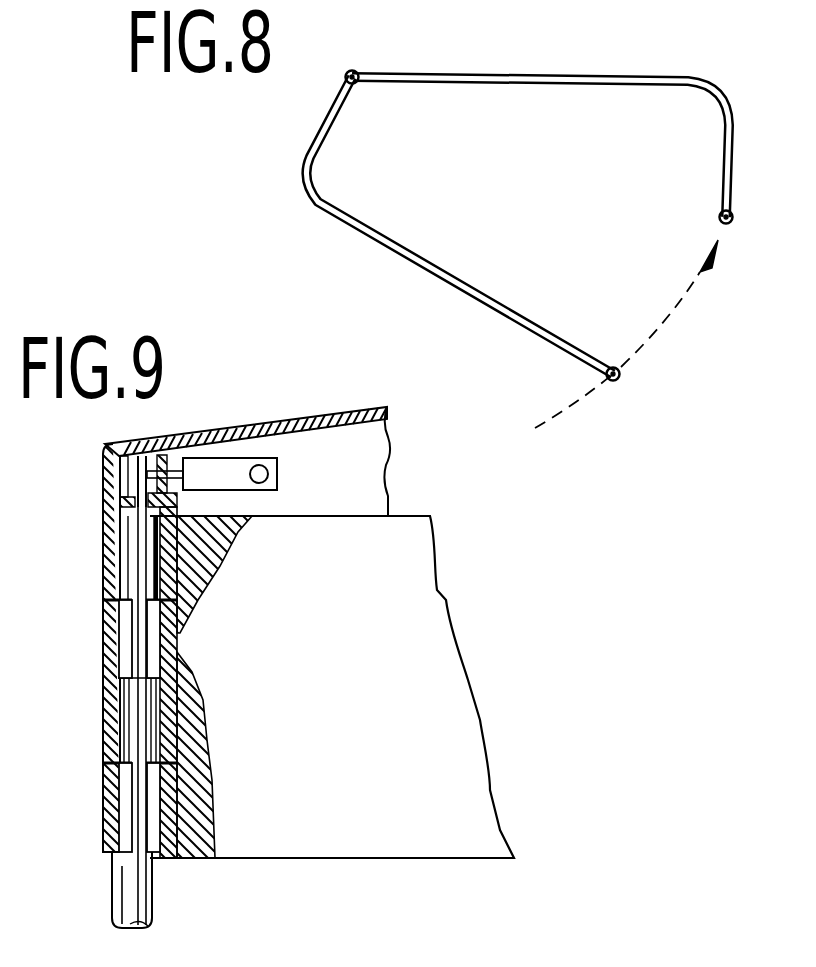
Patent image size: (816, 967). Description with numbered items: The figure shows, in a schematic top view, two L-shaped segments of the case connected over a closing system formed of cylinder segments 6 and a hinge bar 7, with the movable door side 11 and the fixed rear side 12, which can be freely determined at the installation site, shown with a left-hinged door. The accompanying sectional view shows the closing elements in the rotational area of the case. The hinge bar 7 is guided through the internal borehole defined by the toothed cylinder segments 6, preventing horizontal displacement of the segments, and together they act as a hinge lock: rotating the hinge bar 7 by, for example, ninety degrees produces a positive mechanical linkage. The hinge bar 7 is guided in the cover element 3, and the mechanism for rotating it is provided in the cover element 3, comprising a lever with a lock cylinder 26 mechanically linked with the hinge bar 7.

In FIG. 9, the cover element 3 is at (392, 442).
In FIG. 8, the cylinder segments 6 is at (345, 71).
In FIG. 9, the hinge bar 7 is at (142, 895).
In FIG. 8, the movable door side 11 is at (372, 240).
In FIG. 9, the movable door side 11 is at (103, 718).
In FIG. 8, the fixed rear side 12 is at (474, 78).
In FIG. 9, the fixed rear side 12 is at (103, 622).
In FIG. 9, the lock cylinder 26 is at (232, 470).